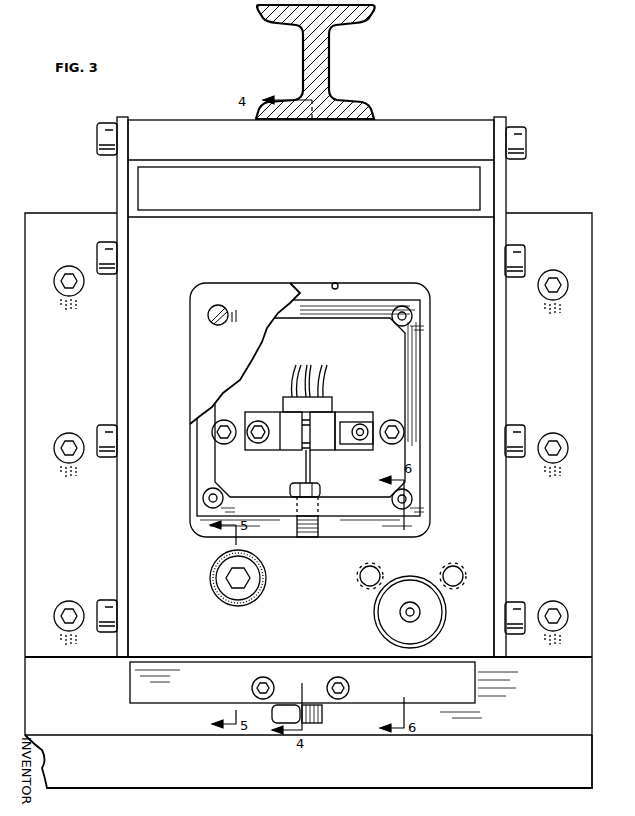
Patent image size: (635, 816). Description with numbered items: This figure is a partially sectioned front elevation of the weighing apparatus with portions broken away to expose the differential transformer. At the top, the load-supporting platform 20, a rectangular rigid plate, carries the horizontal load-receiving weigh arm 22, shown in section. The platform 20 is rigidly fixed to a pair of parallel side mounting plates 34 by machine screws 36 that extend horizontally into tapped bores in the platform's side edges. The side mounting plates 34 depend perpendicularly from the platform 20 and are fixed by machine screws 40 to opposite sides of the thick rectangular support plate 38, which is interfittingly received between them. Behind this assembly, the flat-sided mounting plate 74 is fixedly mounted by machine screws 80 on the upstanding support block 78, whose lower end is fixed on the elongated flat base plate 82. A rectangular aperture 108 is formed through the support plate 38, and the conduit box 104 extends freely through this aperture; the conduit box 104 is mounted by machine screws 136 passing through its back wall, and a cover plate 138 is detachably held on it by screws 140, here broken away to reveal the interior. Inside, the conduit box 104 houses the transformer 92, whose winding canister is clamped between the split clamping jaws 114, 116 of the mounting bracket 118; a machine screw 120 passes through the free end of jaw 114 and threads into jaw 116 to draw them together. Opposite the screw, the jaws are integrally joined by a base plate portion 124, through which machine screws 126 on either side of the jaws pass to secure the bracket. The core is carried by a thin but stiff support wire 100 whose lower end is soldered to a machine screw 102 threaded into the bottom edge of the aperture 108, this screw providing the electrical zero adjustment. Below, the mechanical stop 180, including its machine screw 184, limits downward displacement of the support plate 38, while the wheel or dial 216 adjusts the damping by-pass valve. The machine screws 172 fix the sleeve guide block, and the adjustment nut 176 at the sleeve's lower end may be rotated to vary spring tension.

The load-supporting platform 20 is at (456, 120).
The load-receiving weigh arm 22 is at (327, 55).
The side mounting plates 34 is at (117, 184).
The machine screws 36 is at (97, 142).
The support plate 38 is at (438, 250).
The machine screws 40 is at (97, 247).
The mounting plate 74 is at (582, 213).
The support block 78 is at (532, 709).
The machine screws 80 is at (70, 296).
The base plate 82 is at (513, 760).
The transformer 92 is at (334, 393).
The support wire 100 is at (312, 472).
The machine screw 102 is at (290, 489).
The conduit box 104 is at (422, 324).
The rectangular aperture 108 is at (336, 283).
The clamping jaw 114 is at (320, 444).
The clamping jaw 116 is at (292, 446).
The mounting bracket 118 is at (357, 408).
The machine screw 120 is at (348, 444).
The base plate portion 124 is at (258, 412).
The machine screws 126 is at (253, 450).
The machine screws 136 is at (212, 436).
The cover plate 138 is at (260, 300).
The screws 140 is at (220, 324).
The machine screws 172 is at (252, 686).
The adjustment nut 176 is at (314, 725).
The mechanical stop 180 is at (272, 578).
The machine screw 184 is at (250, 592).
The wheel or dial 216 is at (385, 622).